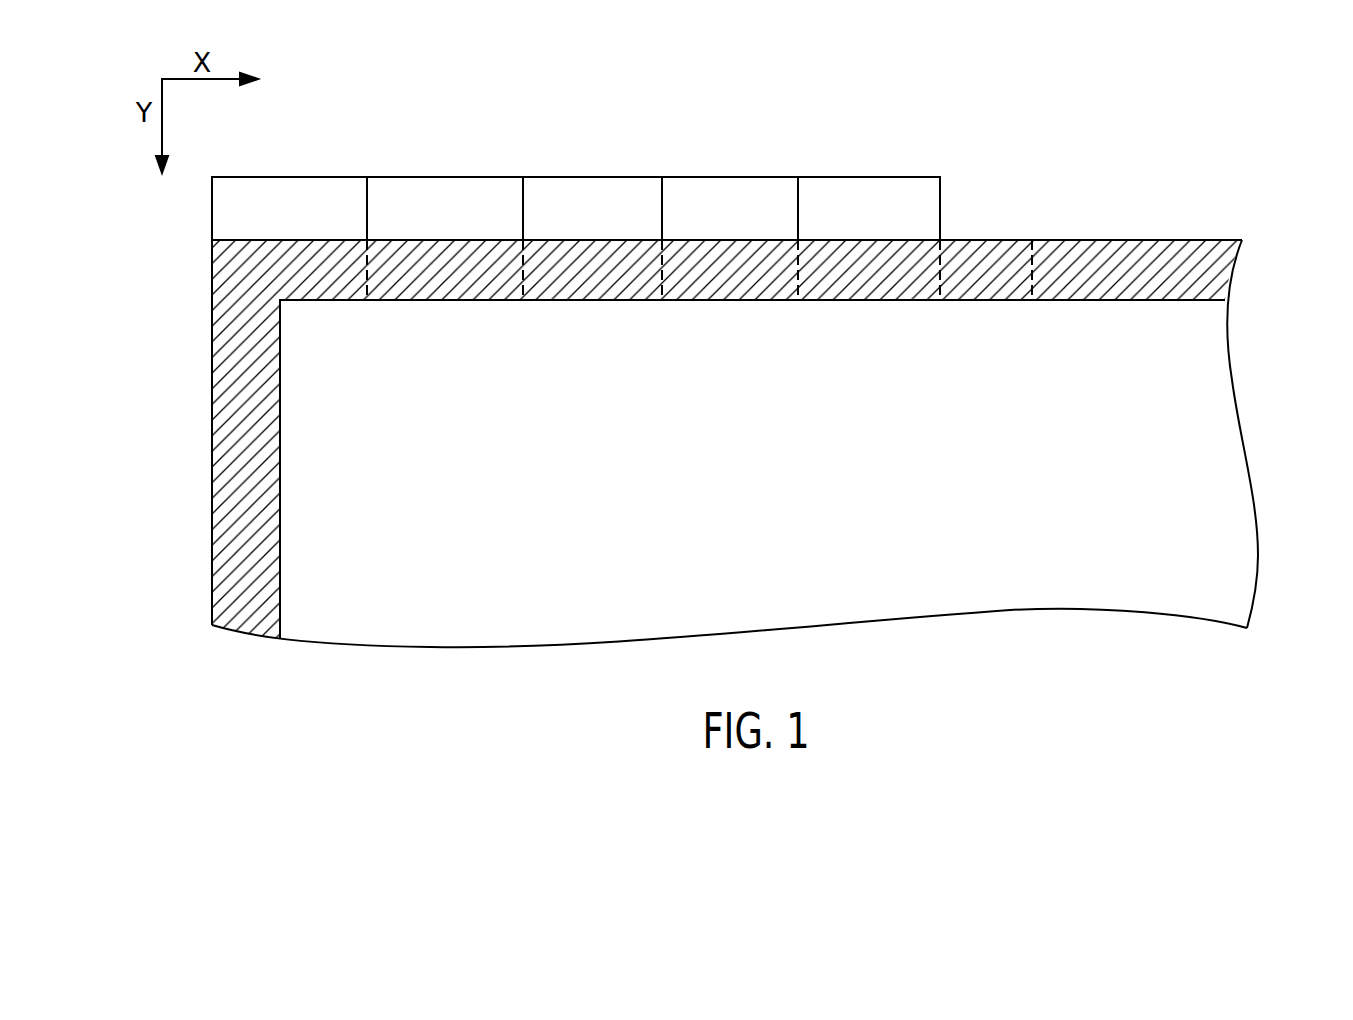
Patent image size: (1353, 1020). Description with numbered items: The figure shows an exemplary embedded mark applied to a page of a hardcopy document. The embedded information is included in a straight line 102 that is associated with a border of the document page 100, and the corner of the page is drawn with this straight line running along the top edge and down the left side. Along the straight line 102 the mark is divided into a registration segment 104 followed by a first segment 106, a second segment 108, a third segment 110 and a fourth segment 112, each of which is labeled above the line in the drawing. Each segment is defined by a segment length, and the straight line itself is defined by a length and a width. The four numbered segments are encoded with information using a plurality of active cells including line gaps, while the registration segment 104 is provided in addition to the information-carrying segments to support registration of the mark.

The document page 100 is at (223, 545).
The straight line 102 is at (1162, 287).
The registration segment 104 is at (322, 287).
The segment #1 106 is at (460, 287).
The segment #2 108 is at (605, 287).
The segment #3 110 is at (740, 287).
The segment #4 112 is at (893, 287).